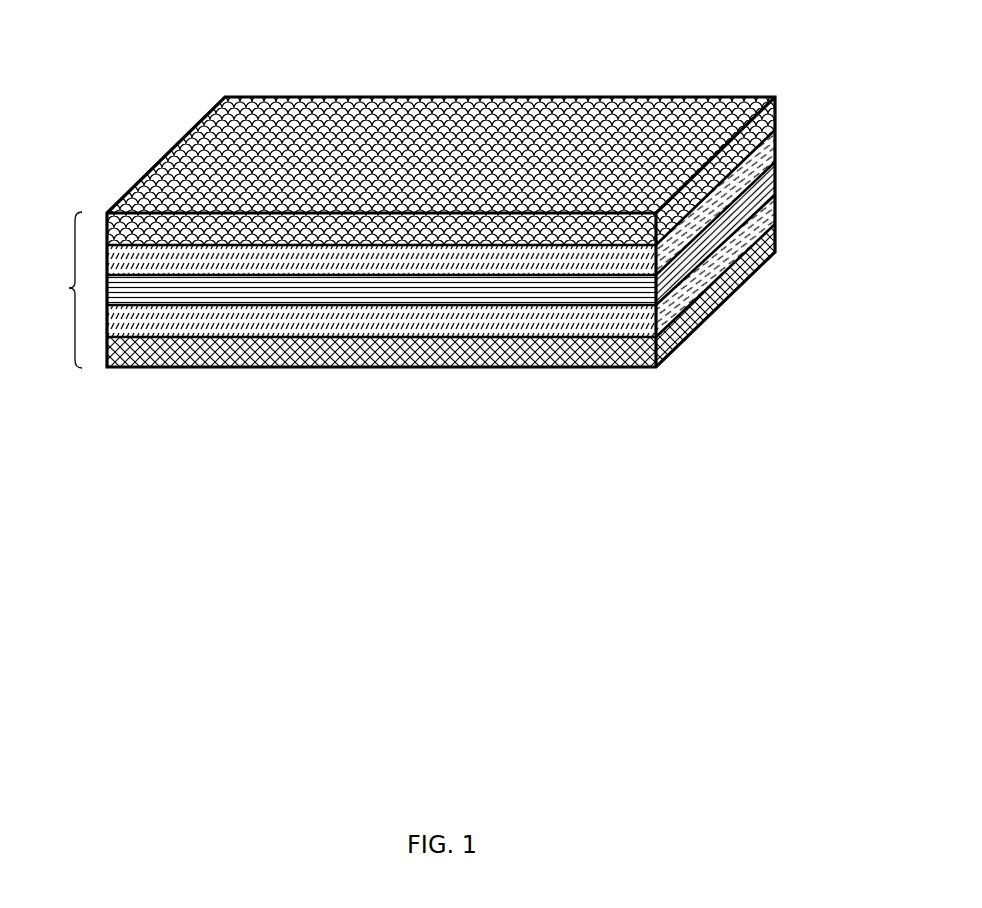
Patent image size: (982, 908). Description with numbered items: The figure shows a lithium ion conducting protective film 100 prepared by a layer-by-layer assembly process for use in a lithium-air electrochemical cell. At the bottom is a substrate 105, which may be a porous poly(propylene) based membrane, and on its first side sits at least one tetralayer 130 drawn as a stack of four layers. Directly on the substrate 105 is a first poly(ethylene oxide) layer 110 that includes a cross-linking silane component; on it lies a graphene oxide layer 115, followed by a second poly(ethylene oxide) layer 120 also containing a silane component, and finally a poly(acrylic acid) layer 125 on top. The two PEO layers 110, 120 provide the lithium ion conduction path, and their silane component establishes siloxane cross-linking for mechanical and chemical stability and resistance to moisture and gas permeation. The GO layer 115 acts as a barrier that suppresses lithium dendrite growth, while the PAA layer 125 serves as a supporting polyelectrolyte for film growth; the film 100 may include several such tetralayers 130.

The lithium ion conducting protective film 100 is at (659, 62).
The substrate 105 is at (777, 240).
The first poly(ethylene oxide) (PEO) layer 110 is at (777, 207).
The graphene oxide (GO) layer 115 is at (777, 176).
The second poly(ethylene oxide) (PEO) layer 120 is at (777, 145).
The poly(acrylic acid) (PAA) layer 125 is at (777, 114).
The tetralayer 130 is at (64, 288).